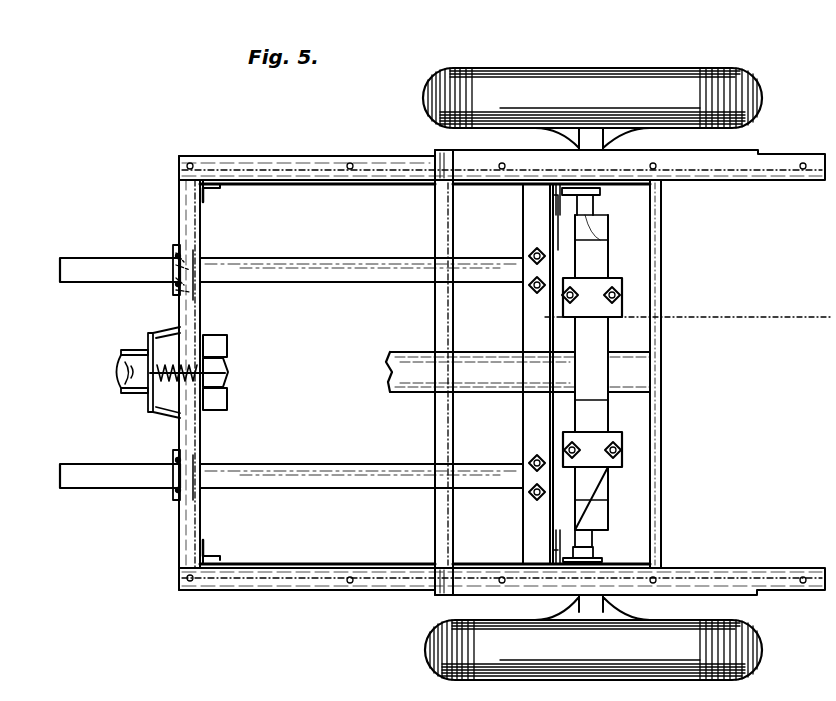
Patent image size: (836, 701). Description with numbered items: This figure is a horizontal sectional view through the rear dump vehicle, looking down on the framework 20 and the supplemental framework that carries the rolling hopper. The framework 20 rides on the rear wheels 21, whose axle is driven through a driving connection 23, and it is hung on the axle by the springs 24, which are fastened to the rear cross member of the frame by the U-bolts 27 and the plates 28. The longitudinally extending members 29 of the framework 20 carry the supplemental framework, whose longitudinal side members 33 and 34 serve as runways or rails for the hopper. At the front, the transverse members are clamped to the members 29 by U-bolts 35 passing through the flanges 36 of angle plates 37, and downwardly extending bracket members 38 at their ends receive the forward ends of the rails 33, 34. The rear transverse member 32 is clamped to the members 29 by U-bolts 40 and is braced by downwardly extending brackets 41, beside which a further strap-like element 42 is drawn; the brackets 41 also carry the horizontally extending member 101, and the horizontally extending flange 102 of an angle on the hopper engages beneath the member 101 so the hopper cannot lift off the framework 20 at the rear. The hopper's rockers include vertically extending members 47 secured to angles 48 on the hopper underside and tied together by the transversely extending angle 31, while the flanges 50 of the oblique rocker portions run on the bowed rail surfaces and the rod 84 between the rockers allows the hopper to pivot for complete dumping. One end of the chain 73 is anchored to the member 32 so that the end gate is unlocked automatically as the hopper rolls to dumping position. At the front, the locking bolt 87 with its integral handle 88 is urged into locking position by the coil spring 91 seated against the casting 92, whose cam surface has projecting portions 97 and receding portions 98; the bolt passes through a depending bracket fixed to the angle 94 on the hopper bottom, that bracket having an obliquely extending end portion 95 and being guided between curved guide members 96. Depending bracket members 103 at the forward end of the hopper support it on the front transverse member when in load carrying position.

The framework 20 is at (100, 282).
The rear wheels 21 is at (655, 64).
The driving connection 23 is at (662, 386).
The springs 24 is at (608, 213).
The U-bolts 27 is at (622, 294).
The plates 28 is at (600, 292).
The longitudinally extending members 29 is at (318, 275).
The transversely extending angle 31 is at (435, 450).
The rear transverse member 32 is at (523, 427).
The longitudinally extending member 33 is at (335, 185).
The longitudinally extending member 34 is at (298, 564).
The U-bolts 35 is at (176, 255).
The flanges 36 is at (173, 290).
The angle plates 37 is at (202, 292).
The bracket member 38 is at (210, 190).
The U-bolts 40 is at (529, 288).
The brackets 41 is at (556, 200).
The strap 42 is at (553, 221).
The vertically extending members 47 is at (460, 172).
The angles 48 is at (326, 148).
The flanges 50 is at (700, 146).
The chain 73 is at (682, 317).
The rod 84 is at (662, 263).
The locking bolt 87 is at (218, 370).
The handle 88 is at (128, 372).
The coil spring 91 is at (170, 380).
The casting 92 is at (138, 350).
The angle 94 is at (198, 528).
The obliquely extending end portion 95 is at (228, 376).
The curved guide members 96 is at (242, 326).
The projecting portions 97 is at (125, 350).
The receding portions 98 is at (120, 364).
The horizontally extending member 101 is at (600, 226).
The horizontally extending flange 102 is at (600, 191).
The depending bracket members 103 is at (210, 180).